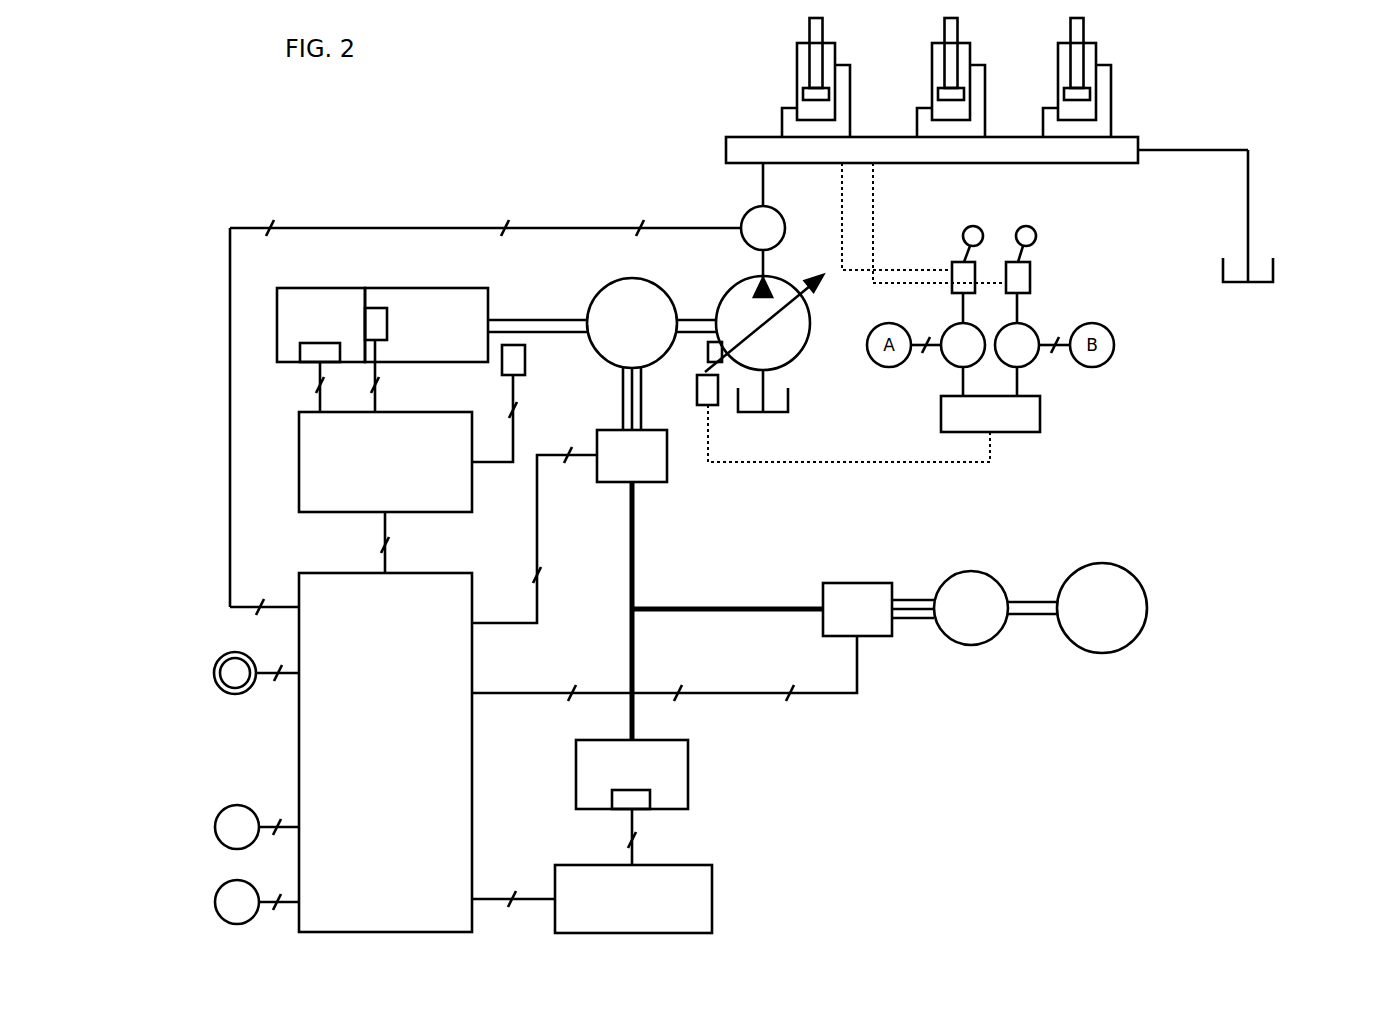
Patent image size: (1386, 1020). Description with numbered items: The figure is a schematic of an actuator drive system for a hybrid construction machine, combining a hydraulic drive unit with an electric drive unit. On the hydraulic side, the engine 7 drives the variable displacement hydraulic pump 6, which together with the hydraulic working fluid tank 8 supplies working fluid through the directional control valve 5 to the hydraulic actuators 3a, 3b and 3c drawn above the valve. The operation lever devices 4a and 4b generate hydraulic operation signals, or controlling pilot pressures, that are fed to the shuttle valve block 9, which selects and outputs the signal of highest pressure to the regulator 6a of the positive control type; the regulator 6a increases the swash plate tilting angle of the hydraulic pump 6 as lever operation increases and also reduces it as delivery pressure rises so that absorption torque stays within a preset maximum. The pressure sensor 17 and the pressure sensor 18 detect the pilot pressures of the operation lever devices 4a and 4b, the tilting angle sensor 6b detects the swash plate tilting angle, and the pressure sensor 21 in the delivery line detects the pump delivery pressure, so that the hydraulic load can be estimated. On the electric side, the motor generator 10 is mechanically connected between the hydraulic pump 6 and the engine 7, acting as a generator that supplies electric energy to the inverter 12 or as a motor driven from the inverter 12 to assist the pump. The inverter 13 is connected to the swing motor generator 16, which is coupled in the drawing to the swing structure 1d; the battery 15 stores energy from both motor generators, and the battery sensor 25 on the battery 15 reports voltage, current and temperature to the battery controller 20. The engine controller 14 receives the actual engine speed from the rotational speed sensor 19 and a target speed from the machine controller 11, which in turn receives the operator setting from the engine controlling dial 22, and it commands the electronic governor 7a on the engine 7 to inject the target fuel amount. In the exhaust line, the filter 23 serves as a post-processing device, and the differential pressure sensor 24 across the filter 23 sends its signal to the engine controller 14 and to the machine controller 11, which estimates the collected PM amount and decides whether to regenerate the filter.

The swing structure 1d is at (1106, 652).
The boom cylinder 3a is at (808, 62).
The arm cylinder 3b is at (942, 62).
The bucket cylinder 3c is at (1068, 62).
The operation lever device 4a is at (950, 268).
The operation lever device 4b is at (1031, 276).
The directional control valve 5 is at (723, 152).
The hydraulic pump 6 is at (738, 292).
The regulator 6a is at (696, 386).
The tilting angle sensor 6b is at (708, 350).
The engine 7 is at (440, 288).
The electronic governor 7a is at (378, 308).
The hydraulic working fluid tank 8 is at (1277, 290).
The shuttle valve block 9 is at (1042, 416).
The motor generator 10 is at (613, 283).
The machine controller 11 is at (297, 775).
The inverter 12 is at (660, 482).
The inverter 13 is at (882, 583).
The engine controller 14 is at (450, 412).
The battery 15 is at (574, 786).
The swing motor generator 16 is at (944, 578).
The pressure sensor 17 is at (945, 326).
The pressure sensor 18 is at (1030, 326).
The rotational speed sensor 19 is at (527, 362).
The battery controller 20 is at (713, 901).
The pressure sensor 21 is at (742, 215).
The engine controlling dial 22 is at (226, 652).
The filter 23 is at (313, 288).
The differential pressure sensor 24 is at (315, 362).
The battery sensor 25 is at (625, 802).